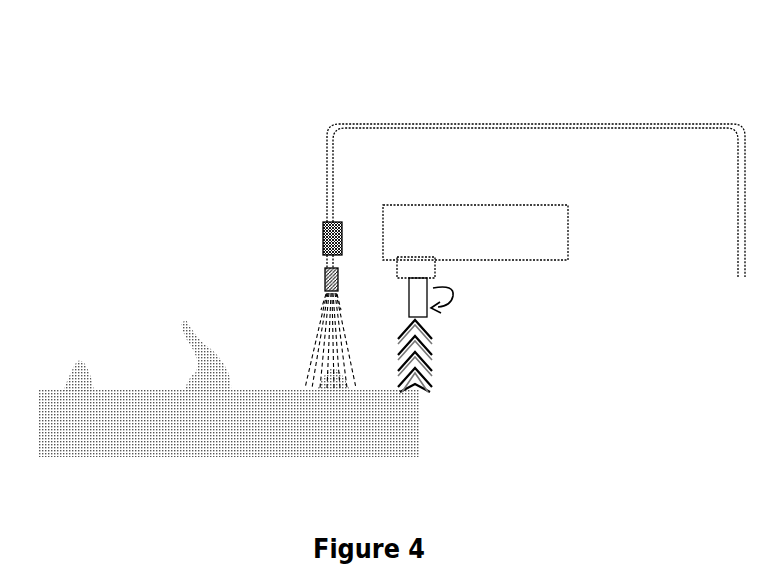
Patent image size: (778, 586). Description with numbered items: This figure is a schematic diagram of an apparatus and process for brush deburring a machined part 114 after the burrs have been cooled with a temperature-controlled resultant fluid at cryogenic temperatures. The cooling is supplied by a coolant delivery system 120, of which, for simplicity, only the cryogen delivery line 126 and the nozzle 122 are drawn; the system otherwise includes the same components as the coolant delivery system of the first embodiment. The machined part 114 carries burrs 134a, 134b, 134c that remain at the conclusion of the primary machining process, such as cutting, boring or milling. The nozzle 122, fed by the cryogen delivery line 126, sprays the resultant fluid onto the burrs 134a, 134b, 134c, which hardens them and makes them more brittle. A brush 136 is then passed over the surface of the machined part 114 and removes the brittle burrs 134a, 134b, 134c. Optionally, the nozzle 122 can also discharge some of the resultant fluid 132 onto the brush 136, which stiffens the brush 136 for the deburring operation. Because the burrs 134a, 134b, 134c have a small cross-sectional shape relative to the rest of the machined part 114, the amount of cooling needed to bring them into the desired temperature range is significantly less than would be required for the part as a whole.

The coolant delivery system 120 is at (502, 207).
The cryogen delivery line 126 is at (353, 124).
The nozzle 122 is at (327, 268).
The resultant fluid 132 is at (322, 335).
The burr 134a is at (322, 378).
The burr 134b is at (188, 343).
The burr 134c is at (81, 370).
The brush 136 is at (423, 357).
The machined part 114 is at (268, 433).